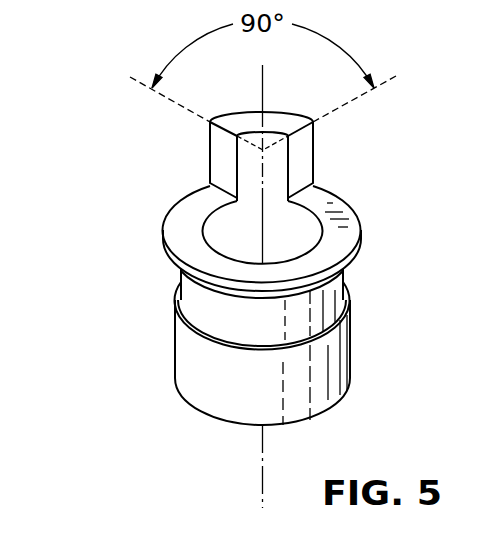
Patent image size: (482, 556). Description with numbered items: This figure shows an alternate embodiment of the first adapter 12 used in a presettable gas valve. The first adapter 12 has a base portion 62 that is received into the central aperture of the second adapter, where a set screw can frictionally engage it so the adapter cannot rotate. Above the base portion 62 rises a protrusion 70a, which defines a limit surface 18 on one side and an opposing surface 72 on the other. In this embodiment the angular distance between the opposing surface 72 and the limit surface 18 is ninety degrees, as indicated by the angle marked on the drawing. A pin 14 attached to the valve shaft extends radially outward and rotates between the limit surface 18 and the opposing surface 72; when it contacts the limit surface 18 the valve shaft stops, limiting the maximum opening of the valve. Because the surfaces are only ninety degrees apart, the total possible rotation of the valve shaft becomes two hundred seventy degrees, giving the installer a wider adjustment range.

The first adapter 12 is at (77, 115).
The pin 14 is at (481, 10).
The limit surface 18 is at (302, 155).
The base portion 62 is at (145, 203).
The protrusion 70a is at (145, 115).
The opposing surface 72 is at (222, 155).